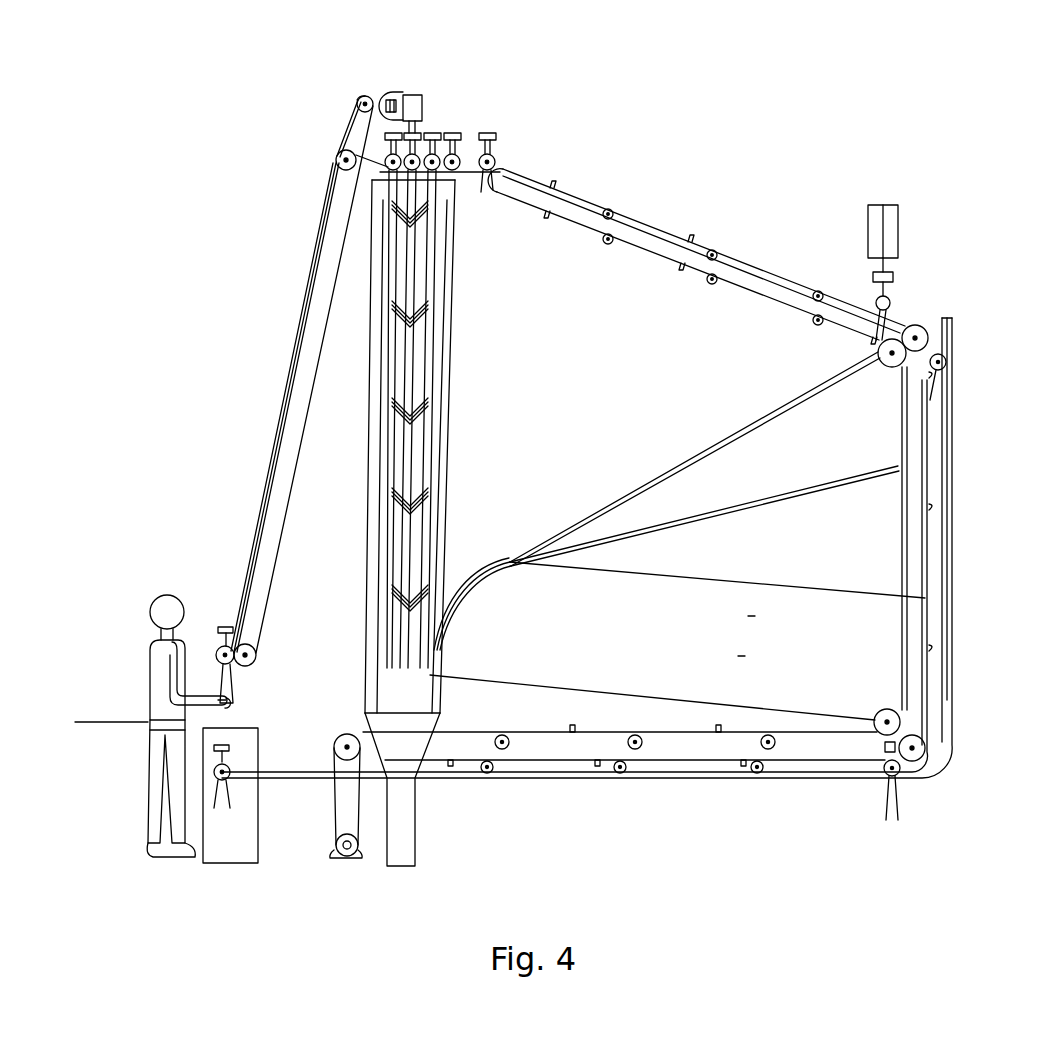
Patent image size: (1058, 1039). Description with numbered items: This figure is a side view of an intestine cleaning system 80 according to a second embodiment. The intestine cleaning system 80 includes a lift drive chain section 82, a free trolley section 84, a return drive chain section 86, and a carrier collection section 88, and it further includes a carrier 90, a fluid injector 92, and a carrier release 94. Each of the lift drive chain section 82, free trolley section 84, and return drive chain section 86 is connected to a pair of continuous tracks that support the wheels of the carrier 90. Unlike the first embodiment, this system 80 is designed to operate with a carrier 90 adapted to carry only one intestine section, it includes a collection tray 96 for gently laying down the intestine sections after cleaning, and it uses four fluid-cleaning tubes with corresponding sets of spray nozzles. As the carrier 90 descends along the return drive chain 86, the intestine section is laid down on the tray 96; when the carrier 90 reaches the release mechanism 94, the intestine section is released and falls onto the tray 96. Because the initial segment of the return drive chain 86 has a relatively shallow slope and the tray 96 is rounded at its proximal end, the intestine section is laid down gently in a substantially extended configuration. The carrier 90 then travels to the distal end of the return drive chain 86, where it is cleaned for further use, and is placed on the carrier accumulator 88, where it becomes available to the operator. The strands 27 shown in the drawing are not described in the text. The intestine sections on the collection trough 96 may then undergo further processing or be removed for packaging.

The intestine cleaning system 80 is at (664, 52).
The lift drive chain section 82 is at (290, 365).
The free trolley section 84 is at (462, 131).
The return drive chain section 86 is at (735, 257).
The carrier collection section 88 is at (288, 780).
The carrier 90 is at (225, 647).
The fluid injector 92 is at (415, 92).
The carrier release 94 is at (890, 205).
The collection tray 96 is at (757, 585).
The strands 27 is at (385, 348).